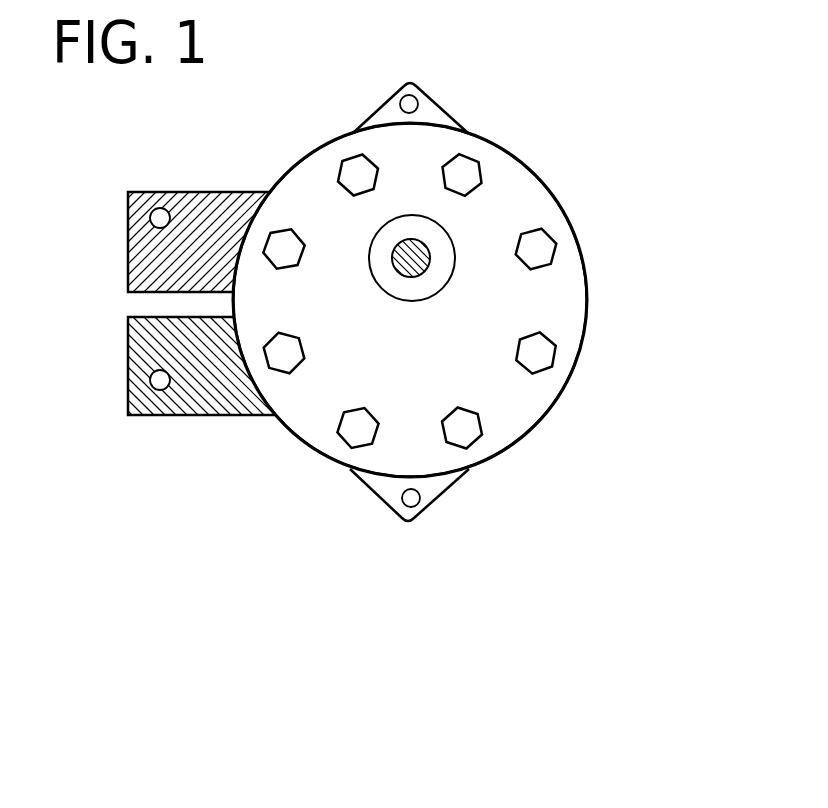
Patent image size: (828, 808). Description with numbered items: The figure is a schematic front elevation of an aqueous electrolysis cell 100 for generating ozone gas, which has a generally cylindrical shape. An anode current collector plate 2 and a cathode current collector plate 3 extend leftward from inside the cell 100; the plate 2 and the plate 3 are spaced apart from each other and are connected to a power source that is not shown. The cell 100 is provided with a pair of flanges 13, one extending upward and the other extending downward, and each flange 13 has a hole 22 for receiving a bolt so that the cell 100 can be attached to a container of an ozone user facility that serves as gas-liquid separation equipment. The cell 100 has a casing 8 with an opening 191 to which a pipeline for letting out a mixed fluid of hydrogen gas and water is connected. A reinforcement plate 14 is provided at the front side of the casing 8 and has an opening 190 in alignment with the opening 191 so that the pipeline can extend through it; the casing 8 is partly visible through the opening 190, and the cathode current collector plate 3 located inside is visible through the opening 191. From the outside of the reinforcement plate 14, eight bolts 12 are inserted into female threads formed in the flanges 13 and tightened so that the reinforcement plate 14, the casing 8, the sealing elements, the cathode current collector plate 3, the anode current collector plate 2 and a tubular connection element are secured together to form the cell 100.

The anode current collector plate 2 is at (128, 258).
The cathode current collector plate 3 is at (175, 400).
The casing 8 is at (428, 285).
The bolts 12 is at (467, 432).
The flanges 13 is at (383, 117).
The reinforcement plate 14 is at (555, 327).
The hole 22 is at (413, 103).
The aqueous electrolysis cell 100 is at (595, 386).
The opening 190 is at (375, 286).
The opening 191 is at (412, 280).